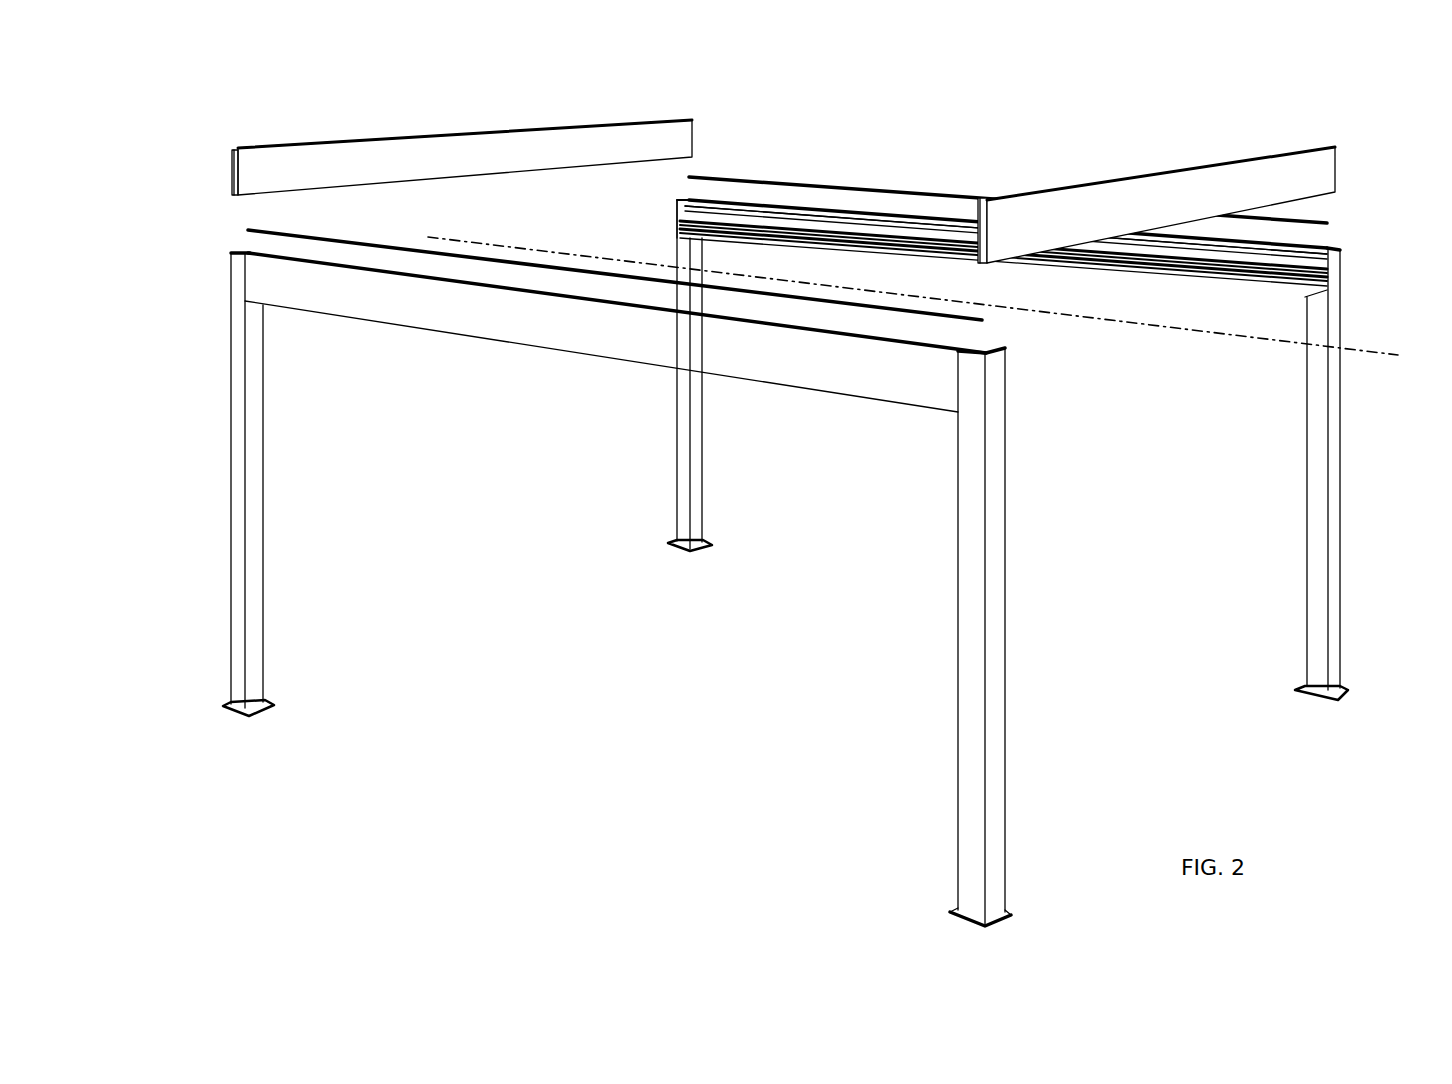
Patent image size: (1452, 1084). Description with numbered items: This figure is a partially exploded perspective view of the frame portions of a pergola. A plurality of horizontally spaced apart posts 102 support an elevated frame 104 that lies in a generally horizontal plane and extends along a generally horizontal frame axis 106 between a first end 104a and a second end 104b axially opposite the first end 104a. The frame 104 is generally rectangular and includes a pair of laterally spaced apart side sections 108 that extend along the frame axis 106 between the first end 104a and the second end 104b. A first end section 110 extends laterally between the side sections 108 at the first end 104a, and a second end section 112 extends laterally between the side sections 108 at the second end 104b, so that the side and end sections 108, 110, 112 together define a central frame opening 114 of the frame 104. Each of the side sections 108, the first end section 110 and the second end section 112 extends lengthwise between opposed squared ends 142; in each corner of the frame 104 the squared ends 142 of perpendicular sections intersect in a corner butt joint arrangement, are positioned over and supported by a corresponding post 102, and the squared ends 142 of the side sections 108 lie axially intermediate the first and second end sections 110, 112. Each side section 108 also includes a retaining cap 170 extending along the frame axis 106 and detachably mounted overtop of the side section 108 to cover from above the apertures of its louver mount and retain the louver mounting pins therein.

The post 102 is at (683, 442).
The frame 104 is at (254, 122).
The first end 104a is at (1358, 273).
The second end 104b is at (211, 257).
The frame axis 106 is at (1202, 330).
The side section 108 is at (762, 383).
The first end section 110 is at (1282, 152).
The second end section 112 is at (510, 132).
The central frame opening 114 is at (903, 258).
The squared end 142 is at (232, 175).
The retaining cap 170 is at (398, 247).